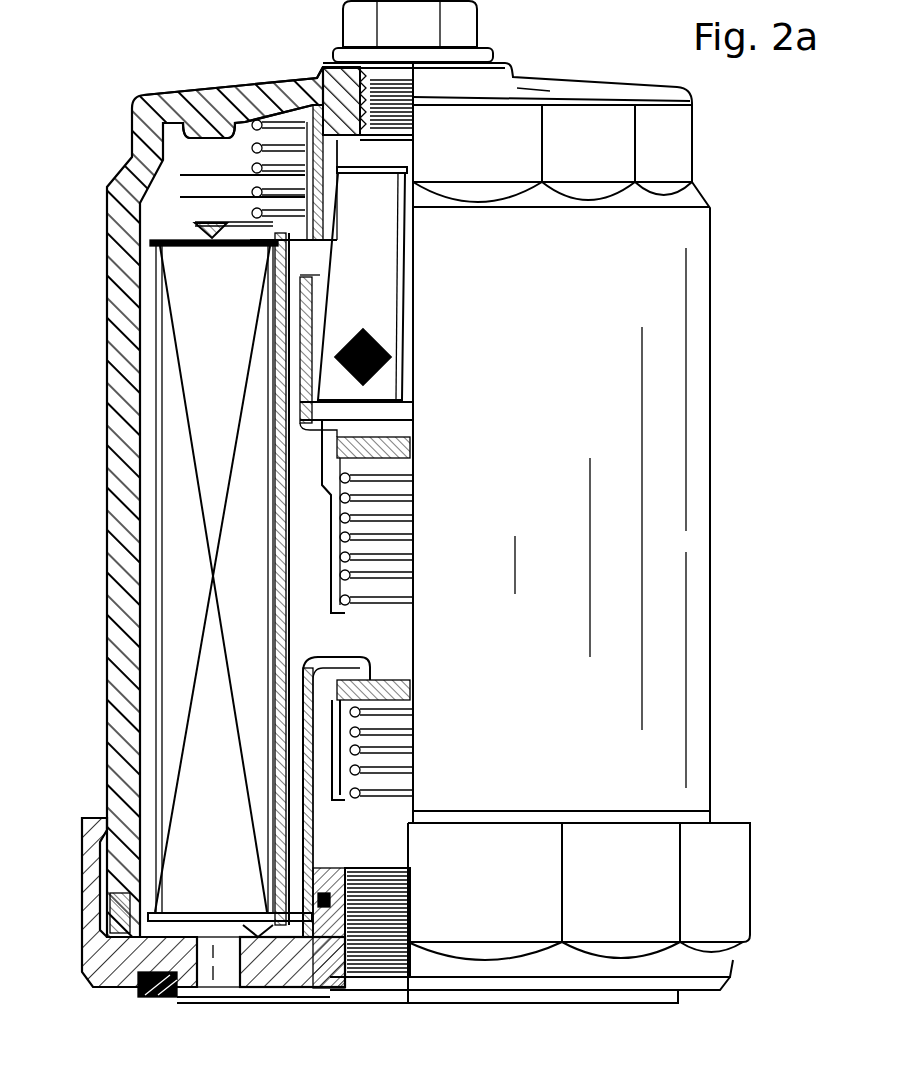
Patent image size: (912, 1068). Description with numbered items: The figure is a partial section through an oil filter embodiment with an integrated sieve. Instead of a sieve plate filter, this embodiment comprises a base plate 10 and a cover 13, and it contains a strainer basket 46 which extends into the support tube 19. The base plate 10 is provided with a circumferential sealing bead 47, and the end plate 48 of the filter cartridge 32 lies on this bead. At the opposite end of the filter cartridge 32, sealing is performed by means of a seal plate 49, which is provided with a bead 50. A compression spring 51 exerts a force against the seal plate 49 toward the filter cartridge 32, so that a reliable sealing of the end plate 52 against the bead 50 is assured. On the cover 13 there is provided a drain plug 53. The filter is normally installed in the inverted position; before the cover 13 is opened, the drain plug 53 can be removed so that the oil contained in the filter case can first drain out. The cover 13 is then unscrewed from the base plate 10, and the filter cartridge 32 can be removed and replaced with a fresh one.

The base plate 10 is at (128, 948).
The cover 13 is at (120, 512).
The support tube 19 is at (275, 328).
The filter cartridge 32 is at (168, 610).
The strainer basket 46 is at (362, 273).
The circumferential sealing bead 47 is at (250, 924).
The end plate 48 is at (218, 922).
The seal plate 49 is at (250, 238).
The bead 50 is at (207, 235).
The compression spring 51 is at (180, 125).
The end plate 52 is at (158, 243).
The drain plug 53 is at (458, 33).